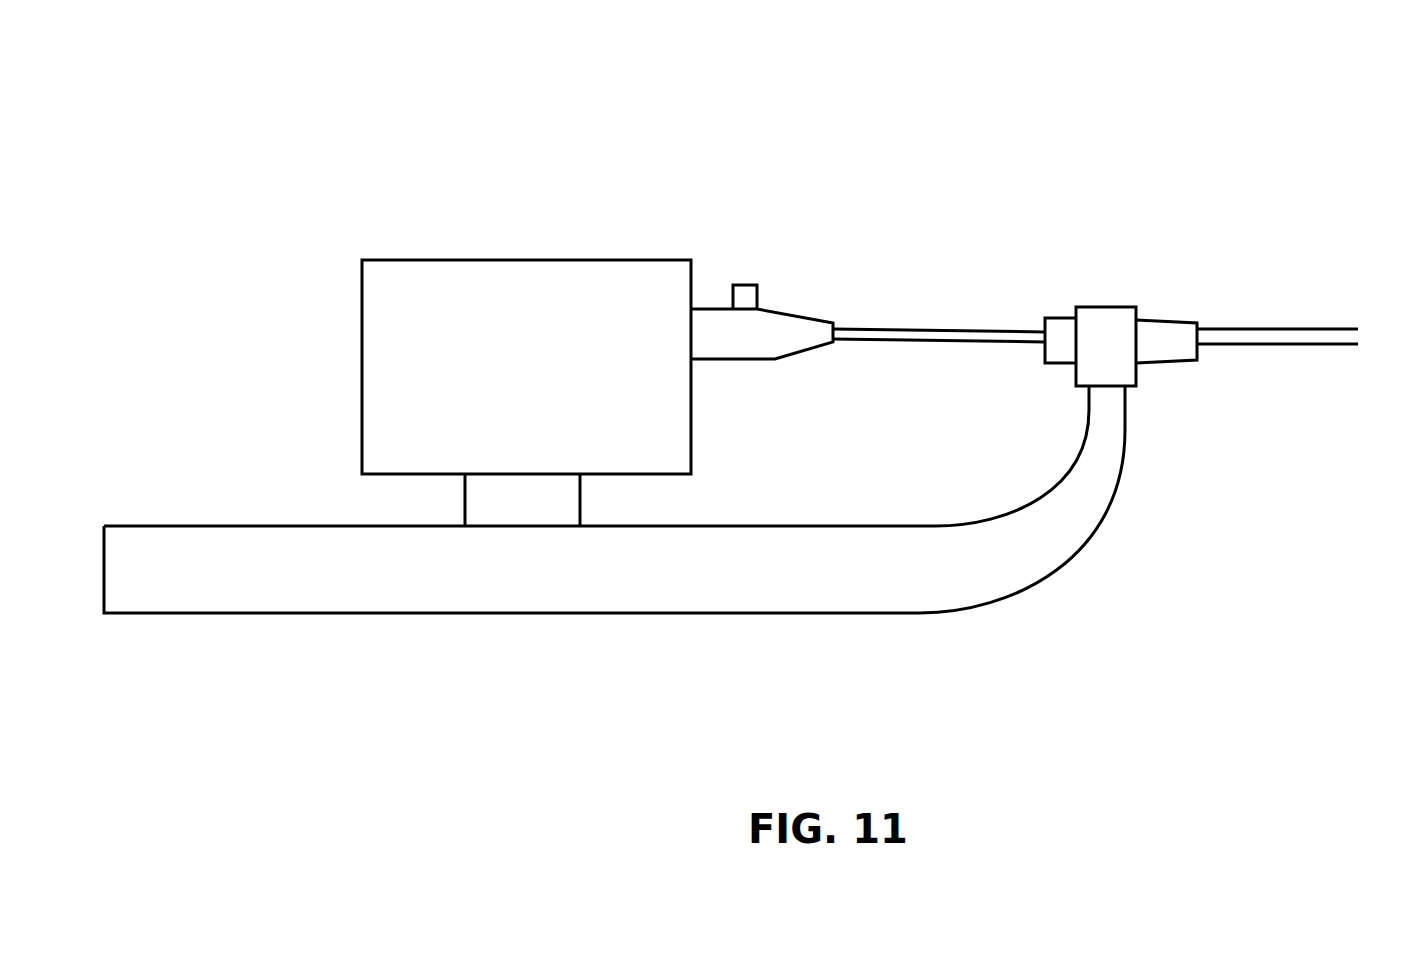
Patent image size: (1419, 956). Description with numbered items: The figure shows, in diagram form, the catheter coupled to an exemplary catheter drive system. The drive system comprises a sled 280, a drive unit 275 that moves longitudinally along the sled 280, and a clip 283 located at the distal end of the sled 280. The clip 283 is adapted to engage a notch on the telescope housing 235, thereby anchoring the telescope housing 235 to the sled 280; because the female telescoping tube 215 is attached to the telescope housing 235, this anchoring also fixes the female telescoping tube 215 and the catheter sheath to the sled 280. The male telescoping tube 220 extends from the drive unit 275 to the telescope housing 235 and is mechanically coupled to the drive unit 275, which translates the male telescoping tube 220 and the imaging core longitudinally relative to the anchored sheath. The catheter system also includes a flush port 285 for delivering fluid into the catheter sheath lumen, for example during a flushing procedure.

The drive unit 275 is at (569, 260).
The flush port 285 is at (748, 285).
The male telescoping tube 220 is at (977, 329).
The clip 283 is at (1109, 307).
The telescope housing 235 is at (1160, 322).
The female telescoping tube 215 is at (1307, 329).
The sled 280 is at (798, 613).